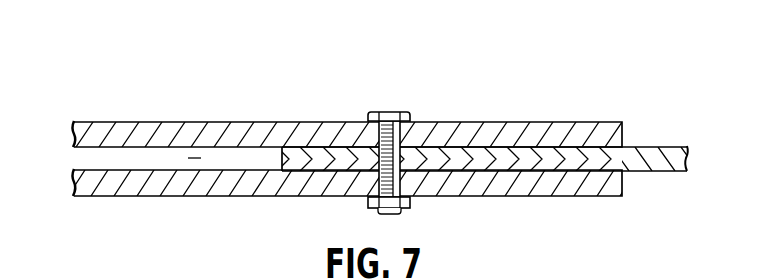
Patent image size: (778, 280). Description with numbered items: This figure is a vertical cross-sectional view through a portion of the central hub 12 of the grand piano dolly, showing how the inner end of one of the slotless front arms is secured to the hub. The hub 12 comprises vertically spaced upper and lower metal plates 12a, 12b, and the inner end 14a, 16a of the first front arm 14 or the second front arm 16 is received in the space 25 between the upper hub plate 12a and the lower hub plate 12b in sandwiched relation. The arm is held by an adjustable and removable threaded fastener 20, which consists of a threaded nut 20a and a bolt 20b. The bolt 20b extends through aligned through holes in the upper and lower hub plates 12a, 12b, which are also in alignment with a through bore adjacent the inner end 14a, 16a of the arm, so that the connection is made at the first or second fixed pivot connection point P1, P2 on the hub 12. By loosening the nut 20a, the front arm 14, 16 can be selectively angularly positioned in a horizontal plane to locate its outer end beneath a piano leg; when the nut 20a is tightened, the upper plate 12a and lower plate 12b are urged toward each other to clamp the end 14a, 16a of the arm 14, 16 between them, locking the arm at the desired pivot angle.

The central hub 12 is at (95, 116).
The upper hub plate 12a is at (141, 122).
The lower hub plate 12b is at (128, 197).
The first front arm 14 is at (465, 153).
The second front arm 16 is at (656, 177).
The inner end of first front arm 14a is at (266, 126).
The inner end of second front arm 16a is at (282, 153).
The fastener 20 is at (407, 107).
The threaded nut 20a is at (409, 204).
The bolt 20b is at (369, 113).
The space between hub plates 25 is at (195, 157).
The first fixed pivot connection point P1 is at (396, 75).
The second fixed pivot connection point P2 is at (390, 93).